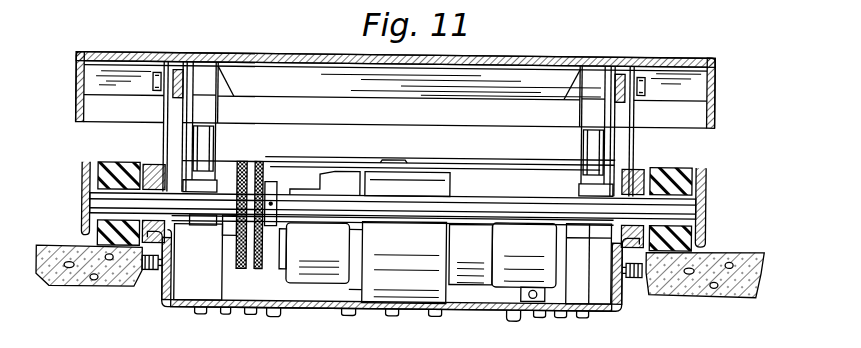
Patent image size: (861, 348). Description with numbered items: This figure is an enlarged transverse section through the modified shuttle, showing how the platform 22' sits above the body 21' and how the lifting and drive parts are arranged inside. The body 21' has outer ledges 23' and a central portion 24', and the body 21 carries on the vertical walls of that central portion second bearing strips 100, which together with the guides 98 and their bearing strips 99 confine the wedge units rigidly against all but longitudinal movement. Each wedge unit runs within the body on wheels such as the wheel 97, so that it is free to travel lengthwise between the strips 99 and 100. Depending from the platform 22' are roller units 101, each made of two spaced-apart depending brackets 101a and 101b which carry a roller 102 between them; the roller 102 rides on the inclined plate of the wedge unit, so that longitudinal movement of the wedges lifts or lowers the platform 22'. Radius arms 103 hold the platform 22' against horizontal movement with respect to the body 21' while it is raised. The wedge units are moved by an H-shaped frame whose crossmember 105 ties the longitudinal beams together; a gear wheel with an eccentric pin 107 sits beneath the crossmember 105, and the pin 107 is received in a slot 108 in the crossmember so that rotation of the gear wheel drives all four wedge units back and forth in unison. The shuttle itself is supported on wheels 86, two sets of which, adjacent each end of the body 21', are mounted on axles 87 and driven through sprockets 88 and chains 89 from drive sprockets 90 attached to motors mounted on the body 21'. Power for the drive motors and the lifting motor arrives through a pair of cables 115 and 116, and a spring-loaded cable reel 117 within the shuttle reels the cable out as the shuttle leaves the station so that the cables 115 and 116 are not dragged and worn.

The platform 22' is at (396, 90).
The radius arm 103 is at (396, 129).
The roller unit 101 is at (178, 130).
The depending bracket 101a is at (182, 147).
The depending bracket 101b is at (398, 129).
The roller 102 is at (398, 150).
The crossmember 105 is at (411, 138).
The eccentric pin 107 is at (390, 165).
The slot 108 is at (432, 171).
The wheel 86 is at (104, 164).
The ledge 23' is at (401, 204).
The body 21' is at (371, 282).
The central portion 24' is at (390, 321).
The second bearing strip 100 is at (390, 284).
The drive sprocket 90 is at (211, 258).
The chain 89 is at (275, 202).
The sprocket 88 is at (321, 256).
The body 21 is at (404, 263).
The axle 87 is at (533, 218).
The spring loaded cable reel 117 is at (562, 289).
The wheel 97 is at (201, 309).
The bearing strip 99 is at (227, 309).
The guide 98 is at (252, 310).
The cable 115 is at (275, 312).
The cable 116 is at (513, 312).